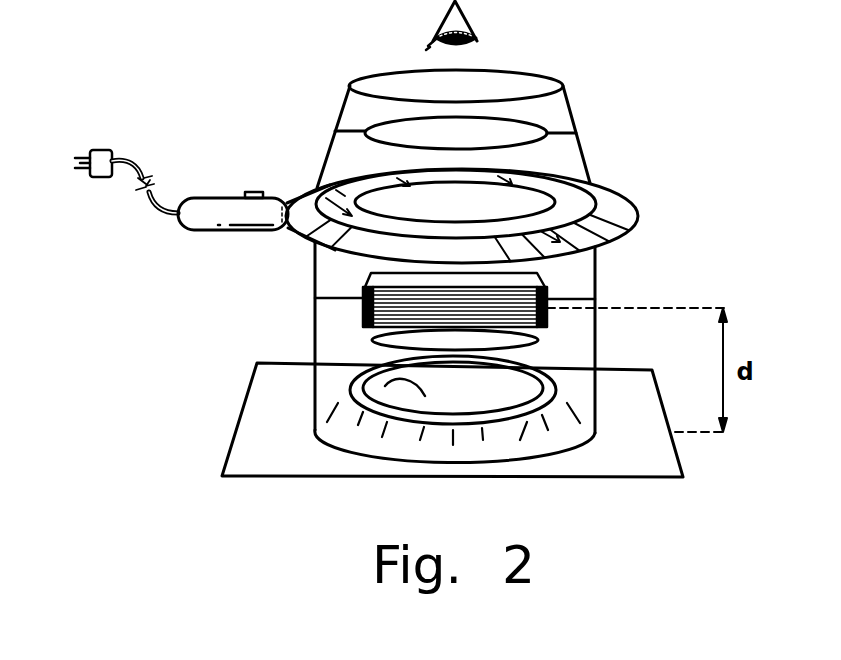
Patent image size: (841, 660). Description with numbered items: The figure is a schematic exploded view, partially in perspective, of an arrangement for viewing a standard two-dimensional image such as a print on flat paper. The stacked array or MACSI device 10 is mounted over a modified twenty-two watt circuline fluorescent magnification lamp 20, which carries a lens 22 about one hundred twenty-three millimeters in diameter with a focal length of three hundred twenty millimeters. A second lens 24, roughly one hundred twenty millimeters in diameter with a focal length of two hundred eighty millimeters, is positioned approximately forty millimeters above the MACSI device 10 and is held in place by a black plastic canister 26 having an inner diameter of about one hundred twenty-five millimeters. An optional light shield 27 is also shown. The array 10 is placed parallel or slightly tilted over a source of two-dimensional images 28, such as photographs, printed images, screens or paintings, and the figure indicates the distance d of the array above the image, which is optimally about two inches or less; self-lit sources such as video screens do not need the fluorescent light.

The MACSI device 10 is at (350, 282).
The circuline fluorescent magnification lamp 20 is at (500, 425).
The lens 22 is at (372, 342).
The second lens 24 is at (510, 132).
The black plastic canister 26 is at (575, 118).
The light shield 27 is at (618, 212).
The source of 2-D images 28 is at (385, 386).